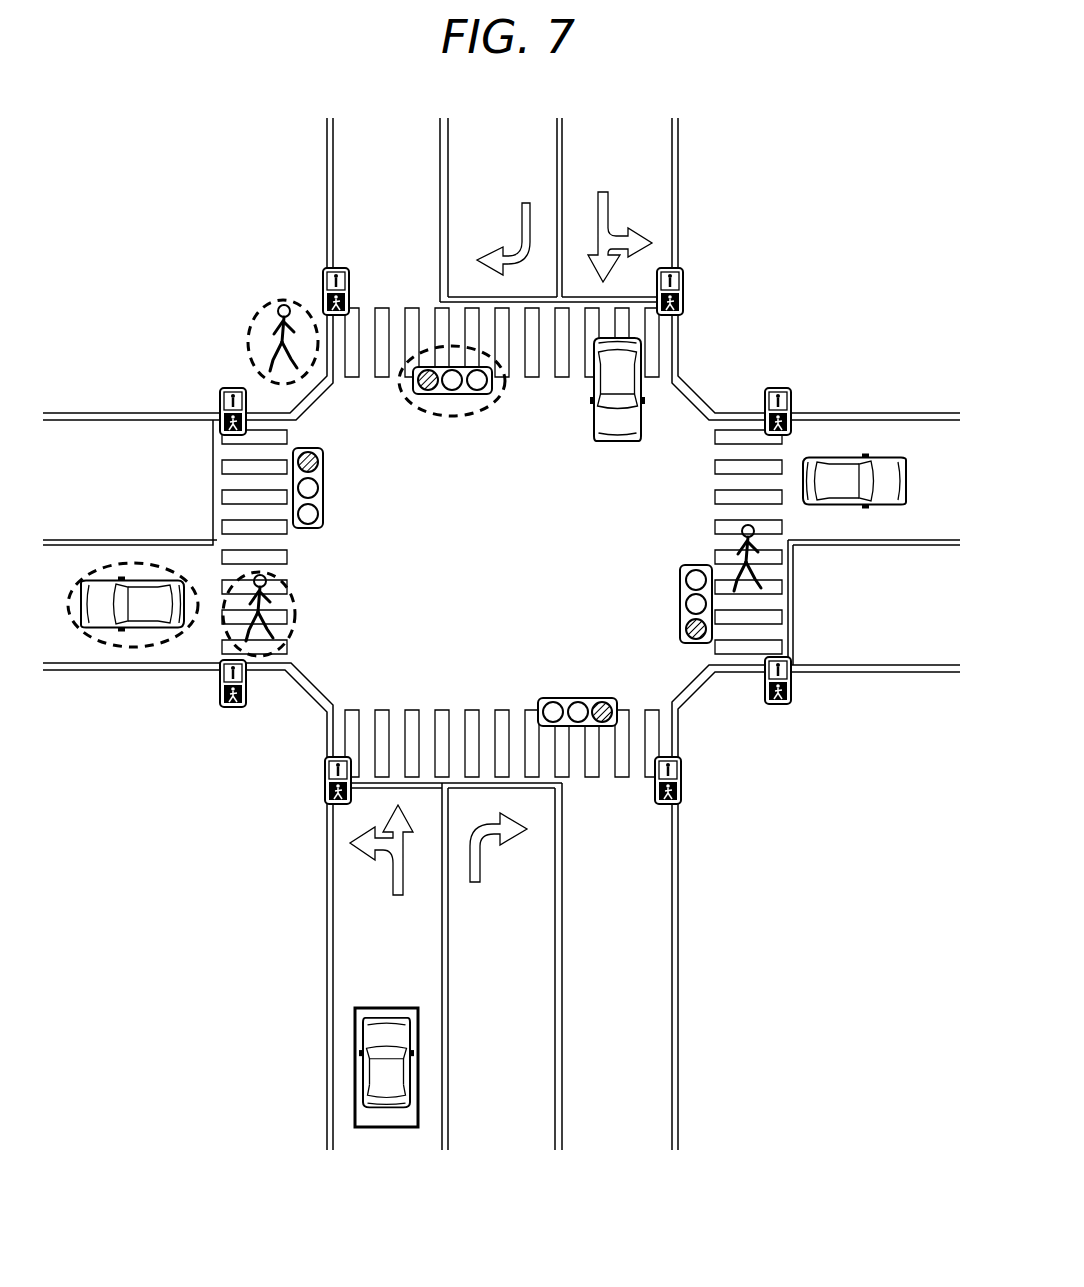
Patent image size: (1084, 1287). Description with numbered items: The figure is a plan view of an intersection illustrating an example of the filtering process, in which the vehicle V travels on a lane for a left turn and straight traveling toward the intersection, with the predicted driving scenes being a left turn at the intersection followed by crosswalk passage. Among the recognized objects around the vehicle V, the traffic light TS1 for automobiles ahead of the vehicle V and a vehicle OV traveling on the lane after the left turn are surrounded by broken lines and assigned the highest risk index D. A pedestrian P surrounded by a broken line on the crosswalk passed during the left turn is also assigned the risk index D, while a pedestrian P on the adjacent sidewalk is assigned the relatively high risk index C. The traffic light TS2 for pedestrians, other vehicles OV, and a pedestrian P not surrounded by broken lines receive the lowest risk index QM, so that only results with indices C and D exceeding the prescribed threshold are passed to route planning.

The lowest risk index QM is at (562, 523).
The pedestrian P is at (285, 301).
The relatively high risk index C is at (276, 341).
The highest risk index D is at (282, 501).
The traffic light for automobiles TS1 is at (433, 398).
The traffic light for pedestrians TS2 is at (683, 277).
The vehicle OV is at (594, 392).
The vehicle V is at (388, 1128).